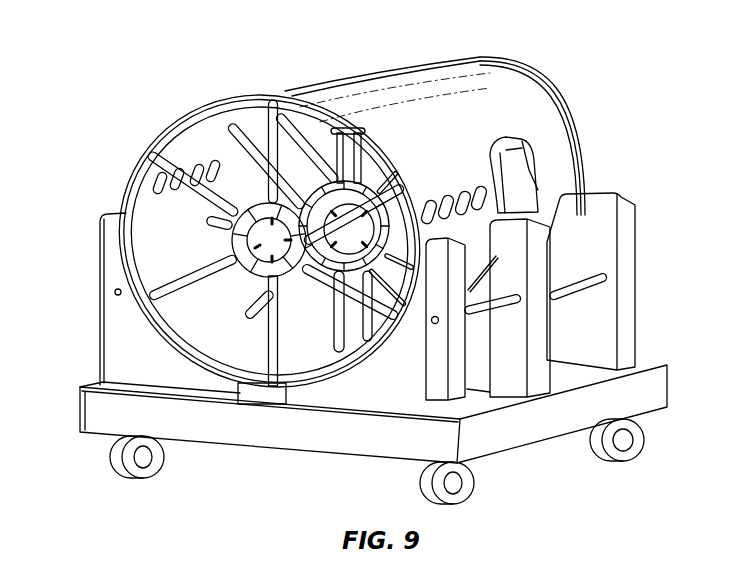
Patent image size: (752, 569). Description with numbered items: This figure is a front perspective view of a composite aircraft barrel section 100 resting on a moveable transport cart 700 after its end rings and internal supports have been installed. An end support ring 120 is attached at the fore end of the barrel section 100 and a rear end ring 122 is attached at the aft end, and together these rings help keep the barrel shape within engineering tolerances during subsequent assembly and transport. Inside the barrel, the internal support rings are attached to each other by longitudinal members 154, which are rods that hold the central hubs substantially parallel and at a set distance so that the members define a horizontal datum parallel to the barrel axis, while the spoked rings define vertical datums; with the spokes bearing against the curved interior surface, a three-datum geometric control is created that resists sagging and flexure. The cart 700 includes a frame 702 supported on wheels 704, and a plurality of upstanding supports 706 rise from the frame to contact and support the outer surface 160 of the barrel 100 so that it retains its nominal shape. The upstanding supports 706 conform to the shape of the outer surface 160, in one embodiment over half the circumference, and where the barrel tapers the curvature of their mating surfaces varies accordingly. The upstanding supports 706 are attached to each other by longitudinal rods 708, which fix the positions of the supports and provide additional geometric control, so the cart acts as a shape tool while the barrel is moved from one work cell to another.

The barrel section 100 is at (422, 95).
The end support ring 120 is at (125, 183).
The rear end ring 122 is at (572, 113).
The longitudinal members 154 is at (335, 120).
The outer surface 160 is at (503, 99).
The moveable transport cart 700 is at (354, 353).
The frame 702 is at (103, 412).
The wheels 704 is at (457, 497).
The upstanding supports 706 is at (626, 237).
The longitudinal rods 708 is at (606, 286).